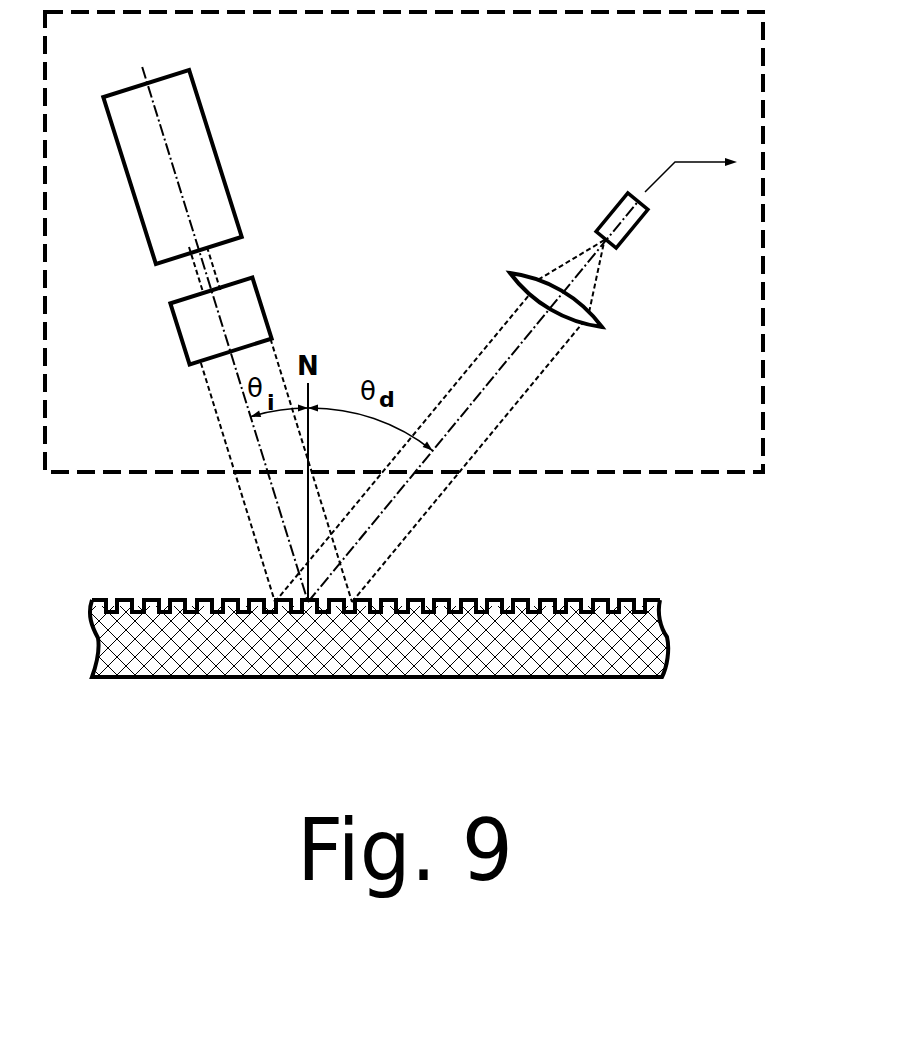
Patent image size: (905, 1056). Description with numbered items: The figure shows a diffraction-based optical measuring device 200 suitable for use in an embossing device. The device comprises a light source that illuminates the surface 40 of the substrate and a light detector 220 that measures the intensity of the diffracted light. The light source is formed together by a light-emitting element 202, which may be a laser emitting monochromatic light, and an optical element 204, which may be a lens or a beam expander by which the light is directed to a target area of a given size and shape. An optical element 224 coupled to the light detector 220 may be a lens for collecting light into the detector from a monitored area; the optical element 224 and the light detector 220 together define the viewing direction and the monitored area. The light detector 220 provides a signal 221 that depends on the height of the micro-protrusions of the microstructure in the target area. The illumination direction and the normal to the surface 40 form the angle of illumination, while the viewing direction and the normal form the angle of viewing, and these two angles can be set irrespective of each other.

The diffraction-based optical measuring device 200 is at (767, 383).
The light-emitting element 202 is at (143, 228).
The optical element 204 is at (173, 328).
The light detector 220 is at (633, 232).
The signal 221 is at (691, 157).
The optical element 224 is at (600, 330).
The surface 40 is at (667, 630).